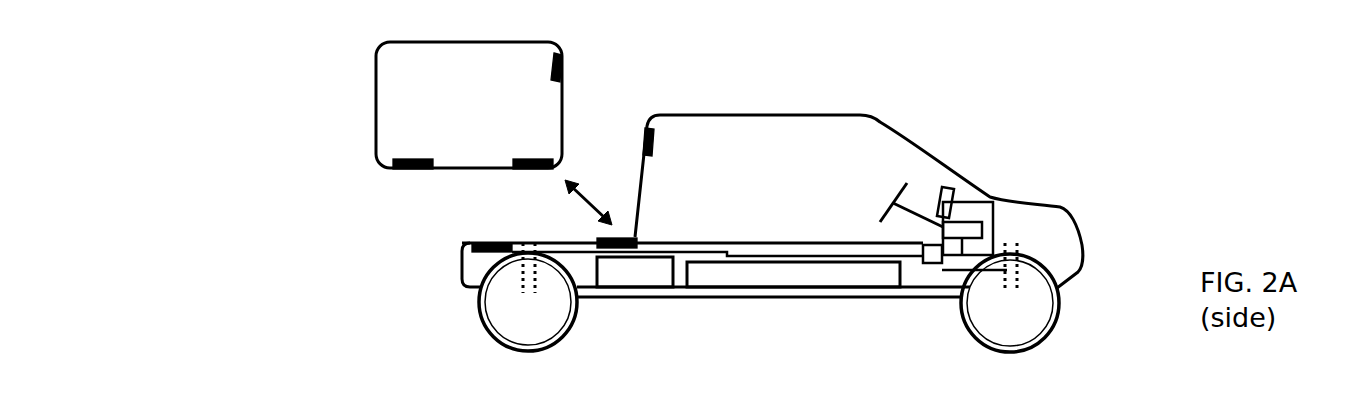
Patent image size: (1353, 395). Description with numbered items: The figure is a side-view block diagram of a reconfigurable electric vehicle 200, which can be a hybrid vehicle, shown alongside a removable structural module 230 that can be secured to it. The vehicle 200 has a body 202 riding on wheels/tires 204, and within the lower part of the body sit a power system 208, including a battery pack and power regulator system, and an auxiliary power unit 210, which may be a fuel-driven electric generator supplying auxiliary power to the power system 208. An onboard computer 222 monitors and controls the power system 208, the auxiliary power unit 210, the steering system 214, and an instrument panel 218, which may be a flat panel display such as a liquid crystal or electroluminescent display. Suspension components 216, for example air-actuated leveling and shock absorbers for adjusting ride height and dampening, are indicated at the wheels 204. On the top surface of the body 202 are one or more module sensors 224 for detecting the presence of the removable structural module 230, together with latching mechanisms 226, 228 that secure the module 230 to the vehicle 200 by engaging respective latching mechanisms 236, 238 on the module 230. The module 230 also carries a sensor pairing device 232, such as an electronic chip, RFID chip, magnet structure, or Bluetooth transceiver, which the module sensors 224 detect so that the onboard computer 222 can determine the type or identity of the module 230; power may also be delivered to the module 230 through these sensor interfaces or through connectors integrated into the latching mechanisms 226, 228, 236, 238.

The vehicle 200 is at (1088, 78).
The body 202 is at (715, 115).
The wheels/tires 204 is at (508, 317).
The power system 208 is at (845, 272).
The auxiliary power unit 210 is at (658, 280).
The steering system 214 is at (892, 190).
The suspension components 216 is at (523, 293).
The instrument panel 218 is at (947, 187).
The onboard computer 222 is at (927, 263).
The module sensor 224 is at (637, 233).
The latching mechanism 226 is at (653, 140).
The latching mechanism 228 is at (472, 252).
The removable structural module 230 is at (446, 138).
The sensor pairing device 232 is at (533, 172).
The latching mechanism 236 is at (562, 65).
The latching mechanism 238 is at (400, 170).